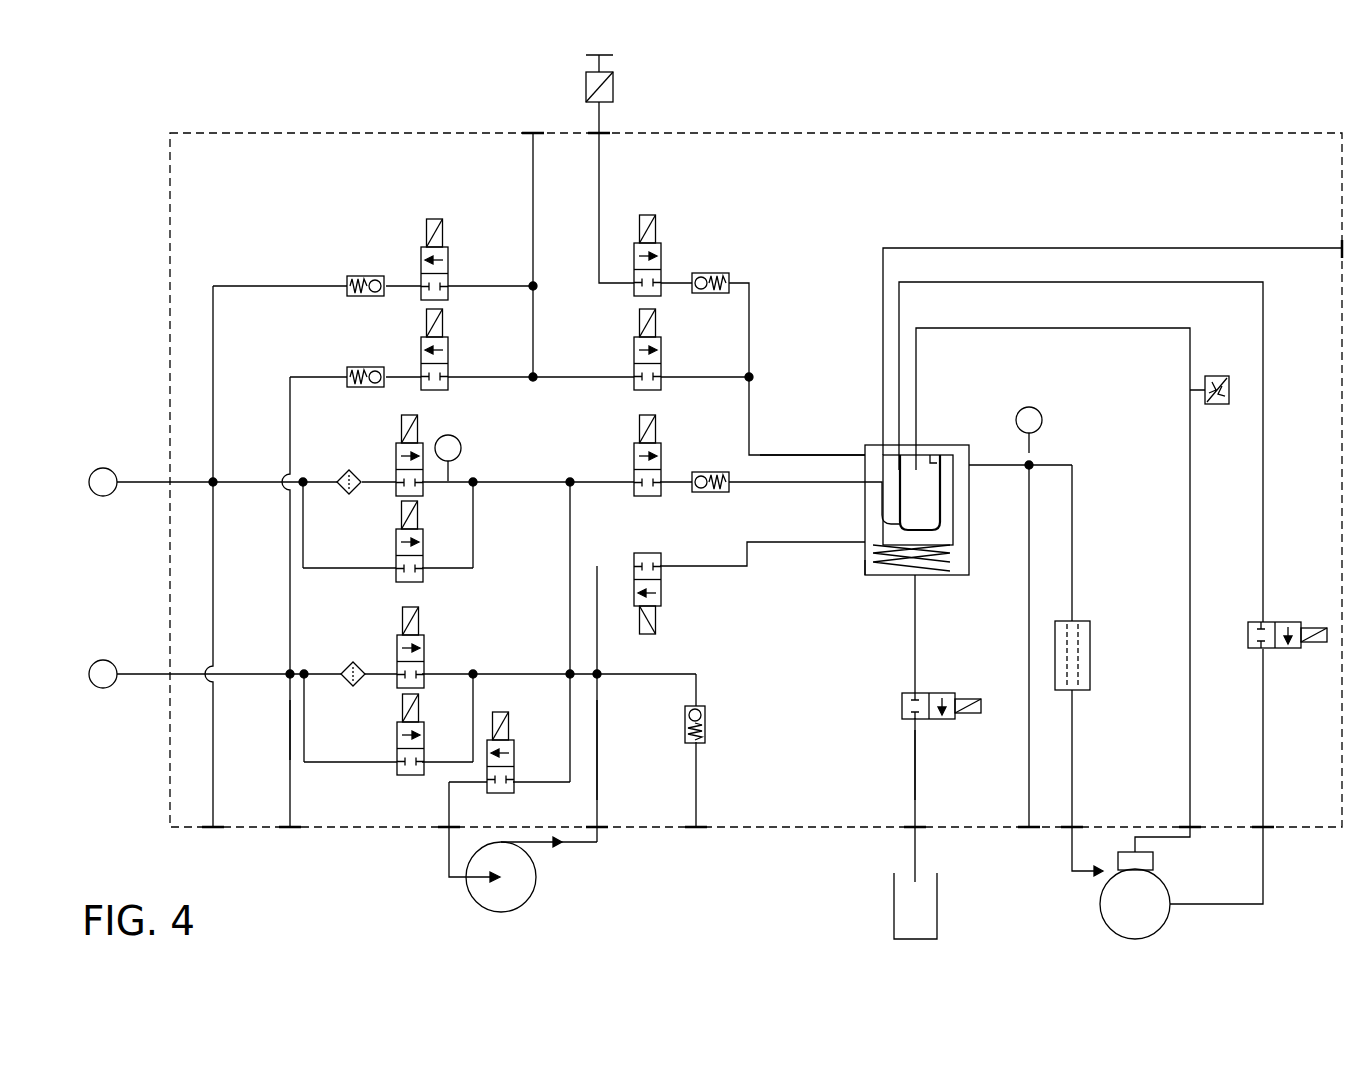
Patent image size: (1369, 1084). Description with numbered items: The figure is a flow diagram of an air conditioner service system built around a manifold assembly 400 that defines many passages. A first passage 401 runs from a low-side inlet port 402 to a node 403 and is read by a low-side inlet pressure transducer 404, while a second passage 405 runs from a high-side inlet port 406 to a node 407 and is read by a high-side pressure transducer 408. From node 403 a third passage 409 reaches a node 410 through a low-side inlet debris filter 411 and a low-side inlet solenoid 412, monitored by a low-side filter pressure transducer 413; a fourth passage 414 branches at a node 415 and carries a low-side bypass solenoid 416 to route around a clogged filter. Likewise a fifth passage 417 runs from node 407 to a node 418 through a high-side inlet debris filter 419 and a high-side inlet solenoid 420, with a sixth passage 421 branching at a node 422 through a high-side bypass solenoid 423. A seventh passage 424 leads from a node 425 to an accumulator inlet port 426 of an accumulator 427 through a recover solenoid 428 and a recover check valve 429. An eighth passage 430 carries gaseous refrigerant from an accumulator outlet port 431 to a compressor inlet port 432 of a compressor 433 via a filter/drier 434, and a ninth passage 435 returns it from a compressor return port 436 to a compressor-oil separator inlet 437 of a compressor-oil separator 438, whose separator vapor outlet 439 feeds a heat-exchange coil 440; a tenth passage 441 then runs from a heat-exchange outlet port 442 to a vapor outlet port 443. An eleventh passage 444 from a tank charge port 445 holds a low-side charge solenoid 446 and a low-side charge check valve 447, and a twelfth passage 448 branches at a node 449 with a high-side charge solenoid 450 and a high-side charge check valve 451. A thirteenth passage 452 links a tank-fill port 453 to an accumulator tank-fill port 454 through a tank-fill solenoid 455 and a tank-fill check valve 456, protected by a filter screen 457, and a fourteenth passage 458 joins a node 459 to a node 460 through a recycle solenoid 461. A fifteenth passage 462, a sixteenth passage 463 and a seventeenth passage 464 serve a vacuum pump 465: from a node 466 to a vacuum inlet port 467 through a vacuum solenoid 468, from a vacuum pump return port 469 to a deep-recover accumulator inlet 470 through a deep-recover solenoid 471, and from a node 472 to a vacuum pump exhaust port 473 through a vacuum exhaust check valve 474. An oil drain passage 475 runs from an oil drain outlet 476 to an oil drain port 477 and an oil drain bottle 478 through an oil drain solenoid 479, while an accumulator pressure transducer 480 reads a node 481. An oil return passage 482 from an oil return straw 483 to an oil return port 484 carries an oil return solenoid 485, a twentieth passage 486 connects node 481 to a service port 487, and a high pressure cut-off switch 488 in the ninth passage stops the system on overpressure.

The manifold assembly 400 is at (207, 122).
The first passage 401 is at (213, 750).
The low-side inlet port 402 is at (213, 830).
The node 403 is at (213, 480).
The low-side inlet pressure transducer 404 is at (103, 468).
The second passage 405 is at (290, 790).
The high-side inlet port 406 is at (290, 830).
The node 407 is at (290, 672).
The high-side pressure transducer 408 is at (103, 660).
The third passage 409 is at (438, 485).
The node 410 is at (475, 485).
The low-side inlet debris filter 411 is at (349, 497).
The low-side inlet solenoid 412 is at (398, 440).
The low-side filter pressure transducer 413 is at (455, 440).
The fourth passage 414 is at (338, 570).
The node 415 is at (304, 480).
The low-side bypass solenoid 416 is at (425, 580).
The fifth passage 417 is at (442, 680).
The node 418 is at (480, 674).
The high-side inlet debris filter 419 is at (350, 662).
The high-side inlet solenoid 420 is at (422, 635).
The sixth passage 421 is at (365, 765).
The node 422 is at (306, 680).
The high-side bypass solenoid 423 is at (397, 750).
The seventh passage 424 is at (775, 485).
The node 425 is at (568, 485).
The accumulator inlet port 426 is at (862, 485).
The accumulator 427 is at (887, 578).
The recover solenoid 428 is at (660, 440).
The recover check valve 429 is at (715, 492).
The eighth passage 430 is at (1075, 590).
The accumulator outlet port 431 is at (998, 446).
The compressor inlet port 432 is at (1076, 826).
The compressor 433 is at (1105, 925).
The filter/drier 434 is at (1090, 660).
The ninth passage 435 is at (1192, 505).
The compressor return port 436 is at (1192, 826).
The compressor-oil separator inlet 437 is at (932, 445).
The compressor-oil separator 438 is at (930, 515).
The separator vapor outlet 439 is at (937, 463).
The heat-exchange coil 440 is at (948, 560).
The tenth passage 441 is at (1070, 248).
The heat-exchange outlet port 442 is at (876, 445).
The vapor outlet port 443 is at (1341, 249).
The eleventh passage 444 is at (270, 286).
The tank charge port 445 is at (533, 133).
The low-side charge solenoid 446 is at (448, 255).
The low-side charge check valve 447 is at (368, 276).
The twelfth passage 448 is at (290, 377).
The node 449 is at (535, 283).
The high-side charge solenoid 450 is at (448, 360).
The high-side charge check valve 451 is at (368, 367).
The thirteenth passage 452 is at (600, 180).
The tank-fill port 453 is at (603, 133).
The accumulator tank-fill port 454 is at (862, 455).
The tank-fill solenoid 455 is at (656, 228).
The tank-fill check valve 456 is at (729, 280).
The filter screen 457 is at (613, 72).
The fourteenth passage 458 is at (600, 380).
The node 459 is at (536, 375).
The node 460 is at (752, 377).
The recycle solenoid 461 is at (661, 345).
The fifteenth passage 462 is at (560, 785).
The sixteenth passage 463 is at (600, 780).
The seventeenth passage 464 is at (698, 770).
The vacuum pump 465 is at (495, 912).
The node 466 is at (568, 660).
The vacuum inlet port 467 is at (449, 830).
The vacuum solenoid 468 is at (510, 735).
The vacuum pump return port 469 is at (598, 830).
The deep-recover accumulator inlet 470 is at (862, 548).
The deep-recover solenoid 471 is at (660, 600).
The node 472 is at (600, 680).
The vacuum pump exhaust port 473 is at (697, 830).
The vacuum exhaust check valve 474 is at (706, 710).
The oil drain passage 475 is at (912, 745).
The oil drain outlet 476 is at (920, 578).
The oil drain port 477 is at (912, 826).
The oil drain bottle 478 is at (894, 920).
The oil drain solenoid 479 is at (948, 693).
The accumulator pressure transducer 480 is at (1040, 412).
The node 481 is at (1032, 465).
The oil return passage 482 is at (1266, 460).
The oil return straw 483 is at (918, 445).
The oil return port 484 is at (1264, 826).
The oil return solenoid 485 is at (1295, 622).
The twentieth passage 486 is at (1028, 760).
The service port 487 is at (1029, 830).
The high pressure cut-off switch 488 is at (1220, 376).